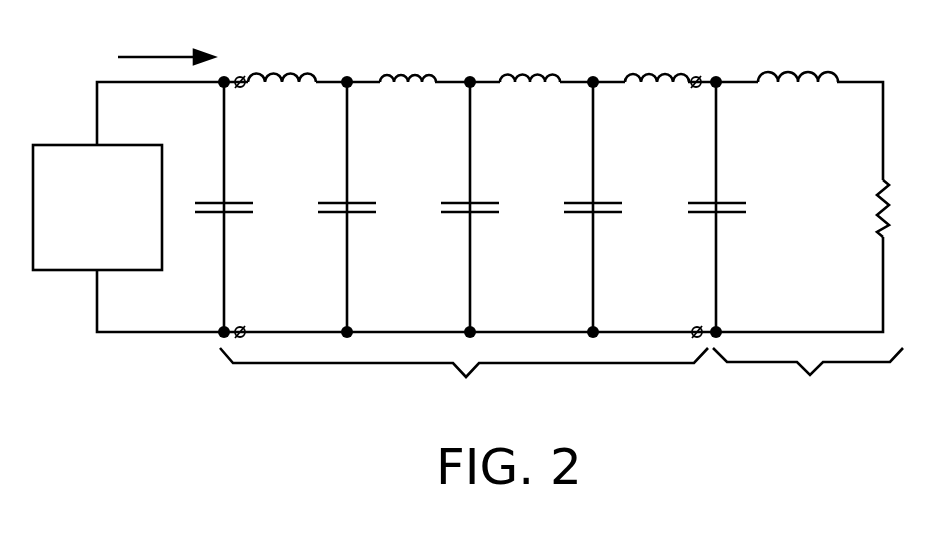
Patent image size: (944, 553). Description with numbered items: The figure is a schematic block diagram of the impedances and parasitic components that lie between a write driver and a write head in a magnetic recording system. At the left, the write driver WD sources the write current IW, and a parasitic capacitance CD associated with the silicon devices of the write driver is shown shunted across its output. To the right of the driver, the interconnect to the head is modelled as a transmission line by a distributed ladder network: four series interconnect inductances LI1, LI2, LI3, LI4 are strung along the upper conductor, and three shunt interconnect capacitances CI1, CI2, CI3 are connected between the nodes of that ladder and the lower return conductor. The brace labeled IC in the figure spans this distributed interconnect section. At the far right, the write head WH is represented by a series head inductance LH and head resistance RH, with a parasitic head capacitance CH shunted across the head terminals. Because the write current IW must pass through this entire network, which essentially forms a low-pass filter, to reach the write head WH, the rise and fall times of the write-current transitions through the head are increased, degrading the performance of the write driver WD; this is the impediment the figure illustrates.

The write driver WD is at (128, 207).
The write current IW is at (166, 46).
The interconnect inductance LI1 is at (282, 55).
The interconnect inductance LI2 is at (408, 55).
The interconnect inductance LI3 is at (530, 55).
The interconnect inductance LI4 is at (657, 55).
The write head inductance LH is at (798, 55).
The write driver parasitic capacitance CD is at (216, 207).
The interconnect capacitance CI1 is at (353, 207).
The interconnect capacitance CI2 is at (476, 207).
The interconnect capacitance CI3 is at (599, 207).
The write head parasitic capacitance CH is at (731, 207).
The write head resistance RH is at (859, 208).
The interconnect current IC is at (464, 384).
The write head WH is at (808, 391).